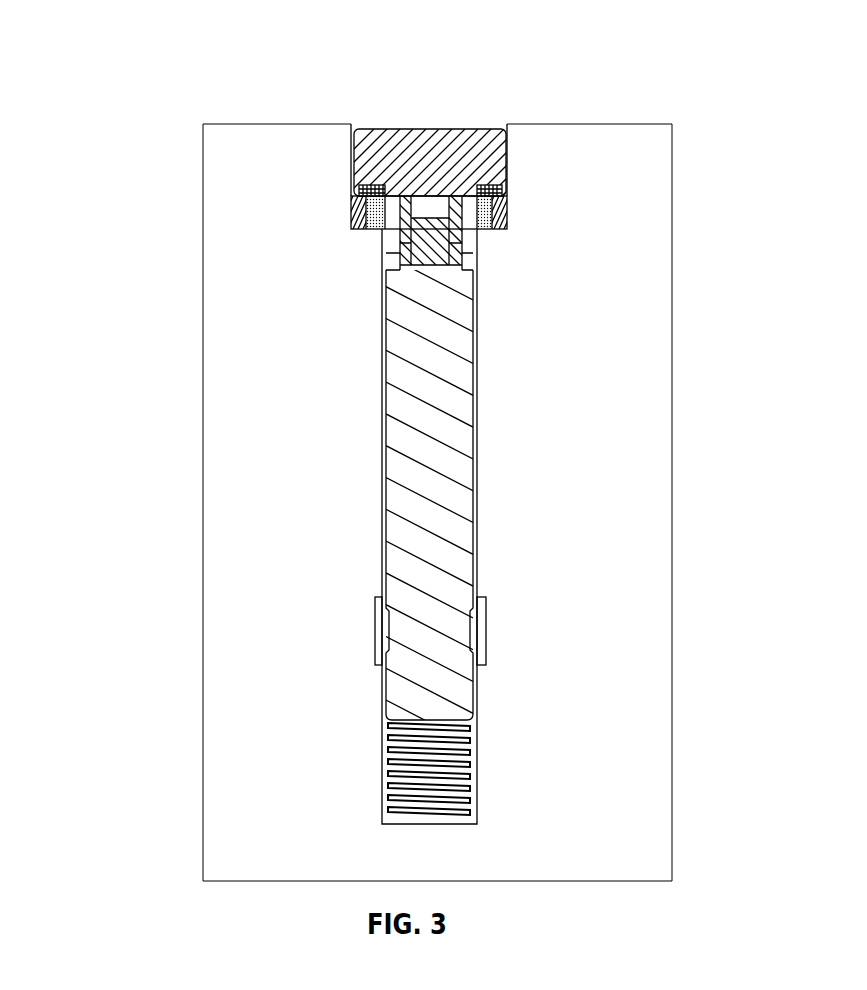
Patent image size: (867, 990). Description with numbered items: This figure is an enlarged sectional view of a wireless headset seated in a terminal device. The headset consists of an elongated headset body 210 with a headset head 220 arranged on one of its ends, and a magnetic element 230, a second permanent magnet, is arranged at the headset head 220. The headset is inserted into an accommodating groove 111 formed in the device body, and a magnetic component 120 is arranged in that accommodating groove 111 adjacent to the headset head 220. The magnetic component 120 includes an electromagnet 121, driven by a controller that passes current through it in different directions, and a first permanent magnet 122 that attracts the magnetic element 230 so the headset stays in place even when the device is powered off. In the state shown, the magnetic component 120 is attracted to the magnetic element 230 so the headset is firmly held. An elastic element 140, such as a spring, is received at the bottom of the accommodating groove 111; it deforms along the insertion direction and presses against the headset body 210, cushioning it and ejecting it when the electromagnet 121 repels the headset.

The headset head 220 is at (403, 150).
The magnetic element 230 is at (358, 187).
The magnetic component 120 is at (285, 503).
The first permanent magnet 122 is at (352, 213).
The electromagnet 121 is at (383, 233).
The accommodating groove 111 is at (467, 257).
The headset body 210 is at (452, 478).
The elastic element 140 is at (467, 793).